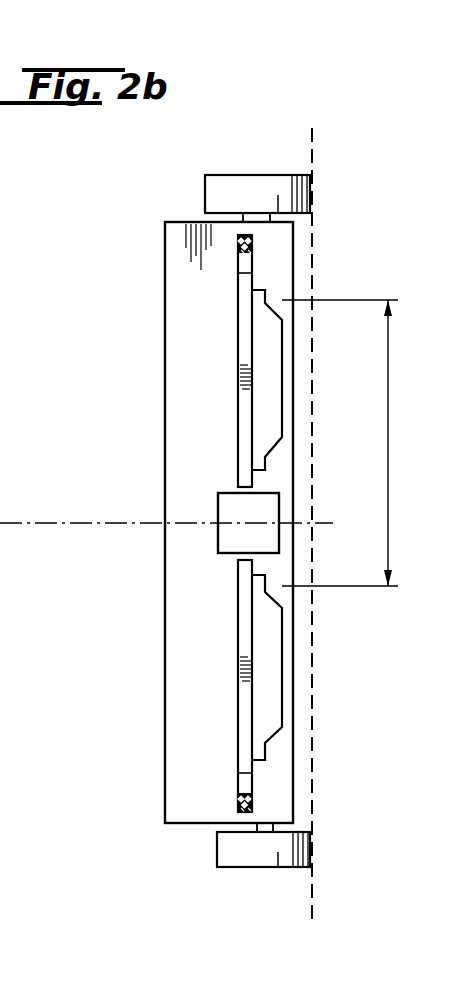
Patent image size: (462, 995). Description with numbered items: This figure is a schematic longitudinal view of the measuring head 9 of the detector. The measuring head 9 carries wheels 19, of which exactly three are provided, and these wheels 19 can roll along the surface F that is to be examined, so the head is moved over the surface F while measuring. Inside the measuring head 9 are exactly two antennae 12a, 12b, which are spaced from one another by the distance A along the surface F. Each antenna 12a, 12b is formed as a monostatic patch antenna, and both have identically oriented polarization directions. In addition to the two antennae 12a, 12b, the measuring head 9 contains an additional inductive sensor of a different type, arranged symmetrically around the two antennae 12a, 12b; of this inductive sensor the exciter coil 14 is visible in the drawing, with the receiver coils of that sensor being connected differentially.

The measuring head 9 is at (183, 206).
The wheels 19 is at (262, 190).
The antenna 12a is at (282, 374).
The antenna 12b is at (282, 678).
The exciter coil 14 is at (238, 798).
The surface F is at (312, 190).
The distance A is at (350, 443).